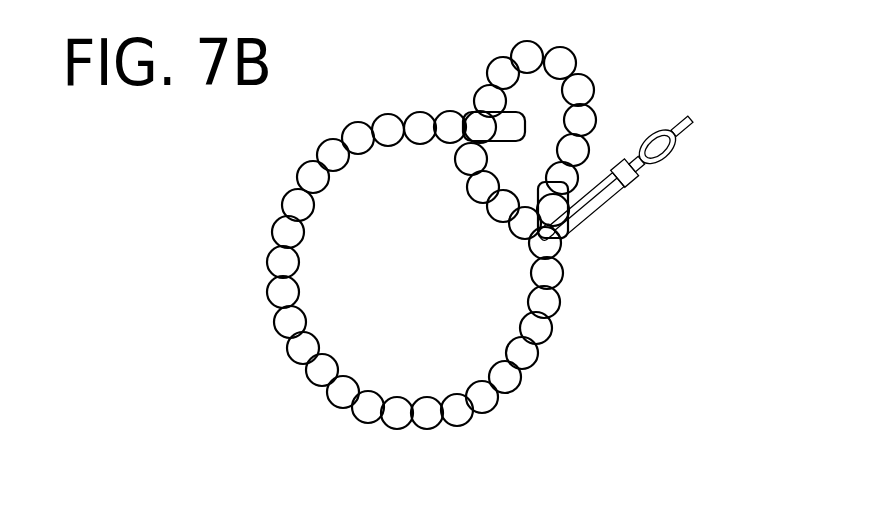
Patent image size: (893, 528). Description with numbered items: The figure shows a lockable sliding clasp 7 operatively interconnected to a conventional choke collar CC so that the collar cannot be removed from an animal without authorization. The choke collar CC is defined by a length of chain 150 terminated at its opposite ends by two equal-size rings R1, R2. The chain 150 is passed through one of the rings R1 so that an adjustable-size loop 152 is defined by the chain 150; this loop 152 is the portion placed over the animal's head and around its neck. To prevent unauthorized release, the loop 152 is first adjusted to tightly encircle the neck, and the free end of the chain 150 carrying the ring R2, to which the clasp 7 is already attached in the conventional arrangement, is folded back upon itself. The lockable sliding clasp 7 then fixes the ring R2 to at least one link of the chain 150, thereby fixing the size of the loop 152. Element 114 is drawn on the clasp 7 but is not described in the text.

The chain 150 is at (382, 436).
The loop 152 is at (314, 300).
The choke collar CC is at (288, 385).
The ring R1 is at (462, 102).
The ring R2 is at (570, 252).
The lockable sliding clasp 7 is at (617, 198).
The ring 114 is at (686, 122).